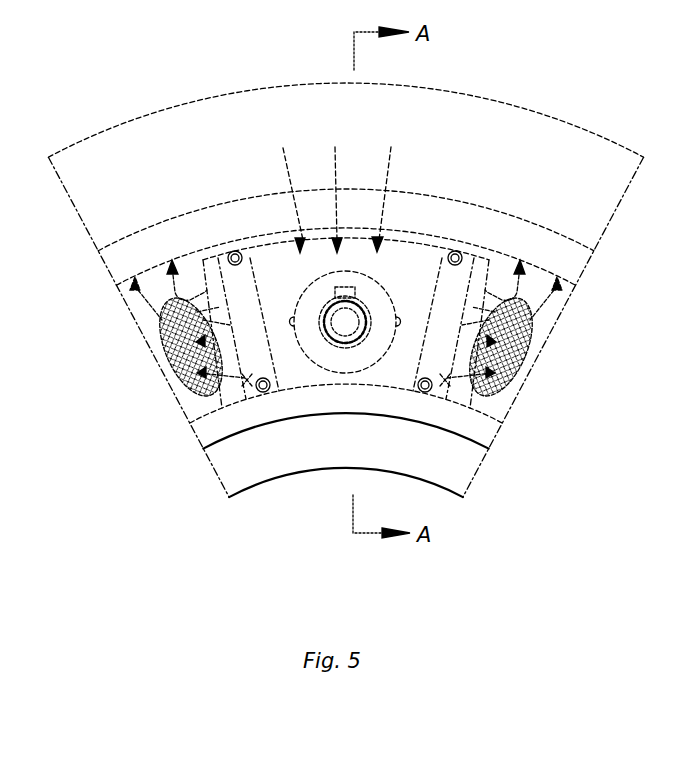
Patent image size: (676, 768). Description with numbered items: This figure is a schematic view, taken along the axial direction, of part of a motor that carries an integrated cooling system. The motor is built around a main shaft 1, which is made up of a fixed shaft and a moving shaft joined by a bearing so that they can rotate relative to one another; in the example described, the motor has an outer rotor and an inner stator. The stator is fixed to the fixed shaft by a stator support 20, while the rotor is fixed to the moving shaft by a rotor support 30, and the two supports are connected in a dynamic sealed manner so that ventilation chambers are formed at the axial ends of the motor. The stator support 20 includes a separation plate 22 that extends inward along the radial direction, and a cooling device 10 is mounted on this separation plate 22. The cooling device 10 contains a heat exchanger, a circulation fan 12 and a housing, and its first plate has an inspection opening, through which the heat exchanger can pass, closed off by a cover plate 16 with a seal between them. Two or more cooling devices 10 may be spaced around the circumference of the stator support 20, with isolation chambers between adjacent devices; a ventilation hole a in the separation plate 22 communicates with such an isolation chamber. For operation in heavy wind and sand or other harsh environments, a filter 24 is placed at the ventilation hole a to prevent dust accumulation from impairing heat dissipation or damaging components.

The main shaft 1 is at (302, 457).
The cooling device 10 is at (408, 237).
The circulation fan 12 is at (386, 357).
The cover plate 16 is at (245, 383).
The stator support 20 is at (113, 277).
The separation plate 22 is at (160, 370).
The filter 24 is at (248, 375).
The rotor support 30 is at (210, 100).
The ventilation hole a is at (529, 357).